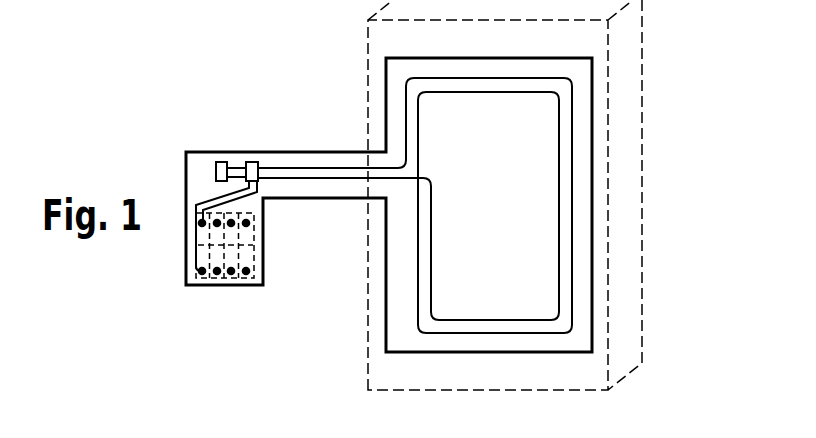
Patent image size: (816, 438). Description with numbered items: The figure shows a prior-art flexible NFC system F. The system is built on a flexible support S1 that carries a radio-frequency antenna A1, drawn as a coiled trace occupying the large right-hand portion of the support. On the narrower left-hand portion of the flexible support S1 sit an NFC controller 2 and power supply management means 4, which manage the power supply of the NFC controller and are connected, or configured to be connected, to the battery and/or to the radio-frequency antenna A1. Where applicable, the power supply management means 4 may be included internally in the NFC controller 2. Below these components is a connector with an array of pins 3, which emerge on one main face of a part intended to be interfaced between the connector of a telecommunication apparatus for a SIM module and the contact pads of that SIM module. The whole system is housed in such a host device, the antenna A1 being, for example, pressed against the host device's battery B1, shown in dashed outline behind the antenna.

The flexible NFC system F is at (240, 44).
The NFC controller 2 is at (222, 162).
The power supply management means 4 is at (251, 162).
The pins 3 is at (231, 276).
The flexible support S1 is at (322, 152).
The radio-frequency antenna A1 is at (572, 135).
The battery B1 is at (628, 270).